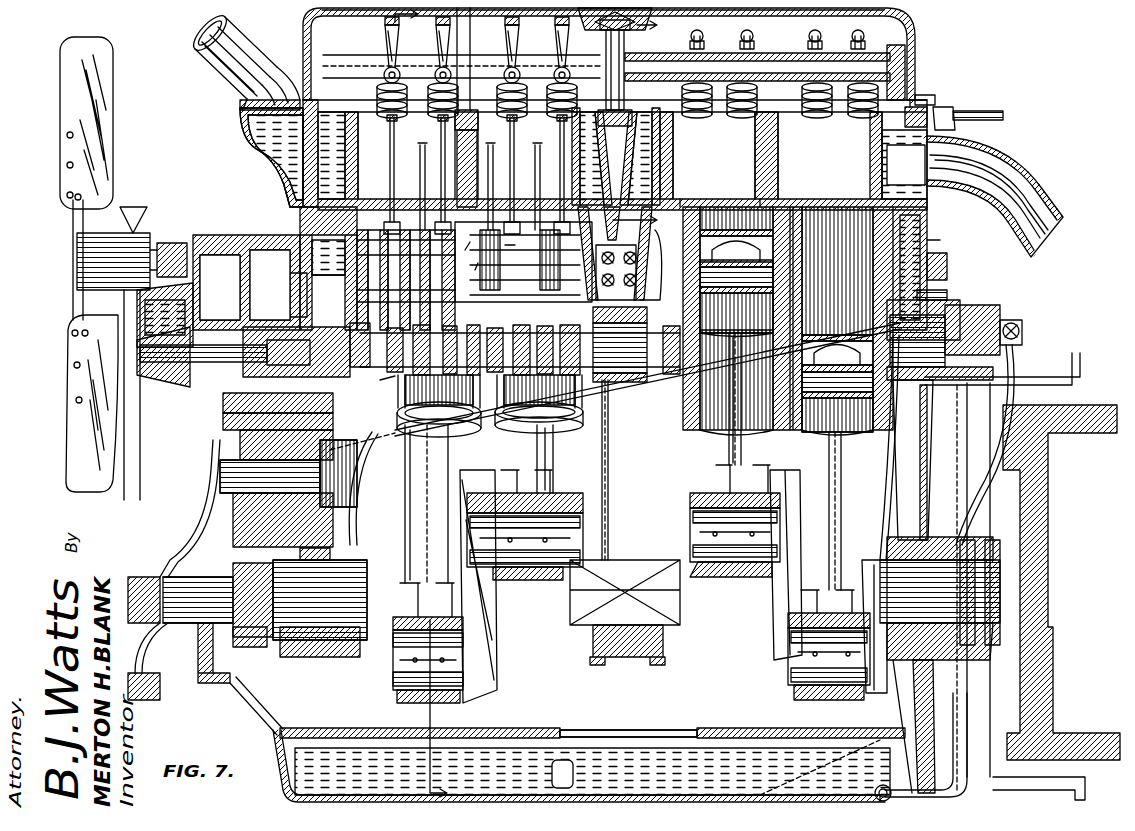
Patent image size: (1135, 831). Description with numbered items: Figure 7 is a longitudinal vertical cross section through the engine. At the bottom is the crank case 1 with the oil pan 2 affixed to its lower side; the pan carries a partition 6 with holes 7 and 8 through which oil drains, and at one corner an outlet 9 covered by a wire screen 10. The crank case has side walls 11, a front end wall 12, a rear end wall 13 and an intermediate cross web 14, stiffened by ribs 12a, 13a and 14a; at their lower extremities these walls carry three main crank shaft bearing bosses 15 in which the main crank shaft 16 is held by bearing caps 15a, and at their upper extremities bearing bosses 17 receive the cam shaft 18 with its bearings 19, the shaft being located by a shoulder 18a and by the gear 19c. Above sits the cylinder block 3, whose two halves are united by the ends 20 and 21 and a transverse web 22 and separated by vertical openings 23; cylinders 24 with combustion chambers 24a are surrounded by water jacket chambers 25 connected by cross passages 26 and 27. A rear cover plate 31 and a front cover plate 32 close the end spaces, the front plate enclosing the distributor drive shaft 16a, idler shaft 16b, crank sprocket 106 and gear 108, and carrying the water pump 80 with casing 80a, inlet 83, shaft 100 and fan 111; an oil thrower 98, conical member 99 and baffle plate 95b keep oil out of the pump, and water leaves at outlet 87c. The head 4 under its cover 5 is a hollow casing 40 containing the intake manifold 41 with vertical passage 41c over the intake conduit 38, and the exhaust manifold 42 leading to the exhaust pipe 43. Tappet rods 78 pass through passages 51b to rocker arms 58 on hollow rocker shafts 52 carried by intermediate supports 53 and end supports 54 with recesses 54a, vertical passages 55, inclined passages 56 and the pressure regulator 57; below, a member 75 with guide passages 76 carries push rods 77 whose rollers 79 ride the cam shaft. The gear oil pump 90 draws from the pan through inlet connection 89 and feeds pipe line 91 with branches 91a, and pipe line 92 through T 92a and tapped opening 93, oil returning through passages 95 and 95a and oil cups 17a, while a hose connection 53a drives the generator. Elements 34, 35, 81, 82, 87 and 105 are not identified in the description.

The crank case 1 is at (948, 470).
The oil pan 2 is at (248, 715).
The cylinder block 3 is at (930, 243).
The head 4 is at (928, 104).
The cover 5 is at (912, 46).
The partition 6 is at (508, 728).
The hole 7 is at (338, 730).
The hole 8 is at (625, 730).
The outlet 9 is at (900, 760).
The wire screen 10 is at (830, 772).
The side walls 11 is at (554, 667).
The front end wall 12 is at (405, 512).
The rib 12a is at (418, 492).
The rear end wall 13 is at (940, 406).
The rib 13a is at (896, 512).
The cross web 14 is at (635, 455).
The rib 14a is at (640, 478).
The main crank shaft bearing boss 15 is at (370, 543).
The bearing cap 15a is at (318, 668).
The main crank shaft 16 is at (496, 620).
The distributor drive shaft 16a is at (240, 420).
The idler shaft 16b is at (218, 475).
The bearing boss 17 is at (330, 385).
The oil cup 17a is at (625, 307).
The cam shaft 18 is at (441, 385).
The shoulder 18a is at (378, 383).
The bearing 19 is at (295, 245).
The gear 19c is at (278, 395).
The end 20 is at (295, 200).
The end 21 is at (915, 213).
The transverse web 22 is at (595, 256).
The vertical opening 23 is at (680, 196).
The cylinder 24 is at (396, 414).
The combustion chamber 24a is at (718, 210).
The water jacket chamber 25 is at (795, 262).
The cross passage 26 is at (285, 203).
The cross passage 27 is at (948, 265).
The cover plate 31 is at (950, 294).
The cover plate 32 is at (210, 235).
The bearing bracket 34 is at (640, 284).
The bracket bolt 35 is at (640, 262).
The intake conduit 38 is at (612, 240).
The hollow casing 40 is at (250, 145).
The intake manifold 41 is at (616, 126).
The vertical passage 41c is at (616, 156).
The exhaust manifold 42 is at (906, 165).
The exhaust pipe 43 is at (1002, 175).
The vertical passage 51b is at (406, 160).
The rocker shaft 52 is at (480, 55).
The intermediate support 53 is at (466, 88).
The hose connection 53a is at (518, 45).
The end support 54 is at (380, 30).
The recess 54a is at (350, 28).
The vertical passage 55 is at (306, 100).
The inclined passage 56 is at (906, 36).
The oil pressure regulator 57 is at (938, 95).
The rocker arm 58 is at (555, 40).
The member 75 is at (500, 243).
The vertical guide passage 76 is at (490, 262).
The push rod 77 is at (465, 240).
The tappet rod 78 is at (392, 128).
The roller 79 is at (450, 302).
The water pump 80 is at (170, 378).
The pump casing 80a is at (145, 328).
The pump shaft 81 is at (210, 370).
The pump housing 82 is at (212, 240).
The inlet 83 is at (152, 400).
The water inlet pipe 87 is at (195, 52).
The outlet 87c is at (238, 98).
The inlet connection 89 is at (1020, 352).
The gear oil pump 90 is at (1020, 322).
The pipe line 91 is at (668, 372).
The branch 91a is at (400, 466).
The pipe line 92 is at (965, 125).
The T 92a is at (958, 110).
The tapped opening 93 is at (935, 108).
The vertical passage 95 is at (240, 110).
The passage 95a is at (275, 180).
The baffle plate 95b is at (268, 220).
The oil thrower 98 is at (269, 285).
The conically shaped member 99 is at (220, 287).
The water pump shaft 100 is at (258, 318).
The front plate 105 is at (258, 640).
The sprocket 106 is at (270, 545).
The gear 108 is at (305, 378).
The fan 111 is at (80, 270).